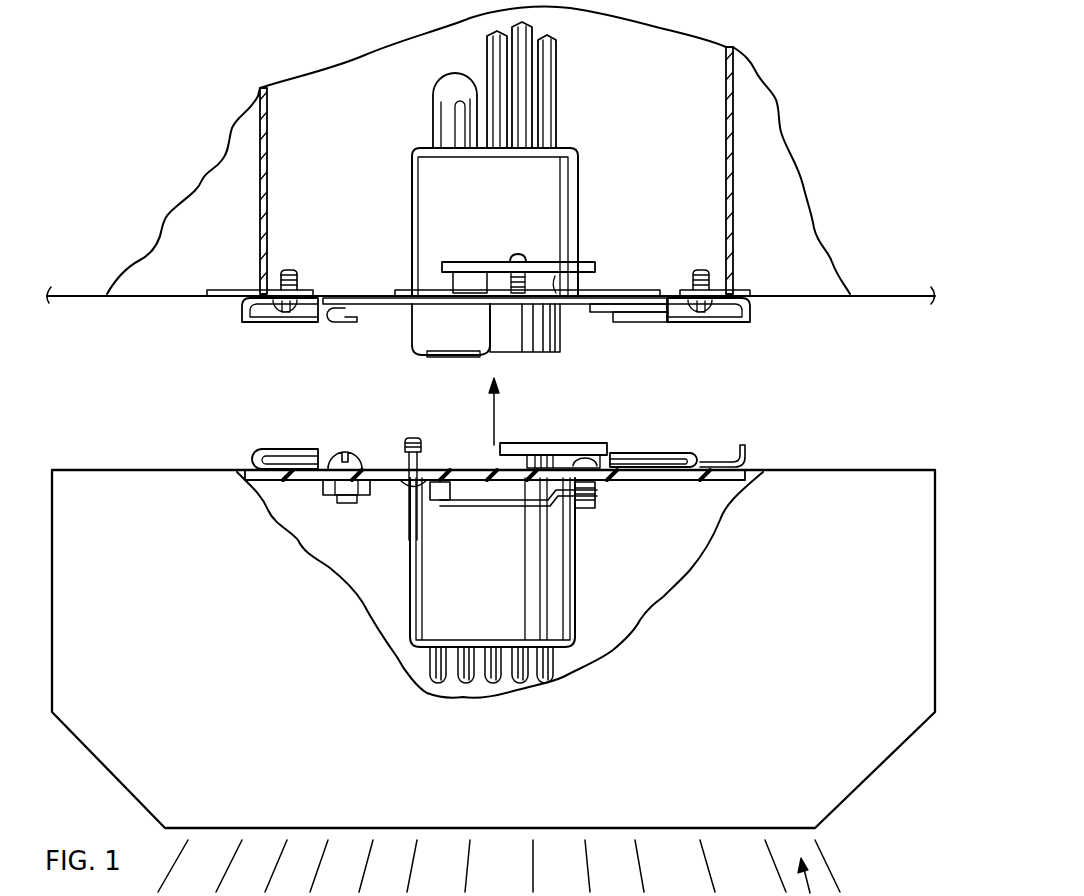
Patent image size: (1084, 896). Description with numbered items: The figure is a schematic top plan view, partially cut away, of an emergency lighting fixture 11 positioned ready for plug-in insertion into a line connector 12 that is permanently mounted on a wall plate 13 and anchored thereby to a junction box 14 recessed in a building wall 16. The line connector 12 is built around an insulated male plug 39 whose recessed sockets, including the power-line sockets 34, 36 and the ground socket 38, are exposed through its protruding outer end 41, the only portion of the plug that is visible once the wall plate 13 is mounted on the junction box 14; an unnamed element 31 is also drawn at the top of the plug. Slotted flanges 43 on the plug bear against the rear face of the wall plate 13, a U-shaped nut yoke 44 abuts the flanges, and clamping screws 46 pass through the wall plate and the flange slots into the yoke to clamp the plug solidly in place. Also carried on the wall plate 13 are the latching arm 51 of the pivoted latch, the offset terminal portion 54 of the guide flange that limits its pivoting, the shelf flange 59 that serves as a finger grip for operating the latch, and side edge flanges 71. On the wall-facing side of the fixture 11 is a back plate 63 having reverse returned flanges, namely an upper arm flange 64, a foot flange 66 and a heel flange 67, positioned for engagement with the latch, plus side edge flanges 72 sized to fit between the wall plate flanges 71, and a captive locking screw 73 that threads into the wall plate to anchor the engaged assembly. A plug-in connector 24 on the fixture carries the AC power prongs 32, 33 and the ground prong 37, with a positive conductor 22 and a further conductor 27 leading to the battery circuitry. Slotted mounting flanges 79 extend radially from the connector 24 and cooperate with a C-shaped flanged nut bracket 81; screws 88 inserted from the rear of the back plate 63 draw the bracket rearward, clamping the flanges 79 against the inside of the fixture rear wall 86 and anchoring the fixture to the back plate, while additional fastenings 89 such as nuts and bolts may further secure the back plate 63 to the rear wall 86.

The emergency lighting fixture 11 is at (208, 468).
The line connector 12 is at (222, 307).
The wall plate 13 is at (285, 336).
The junction box 14 is at (268, 184).
The building wall 16 is at (94, 298).
The positive conductor 22 is at (465, 680).
The plug-in connector 24 is at (577, 553).
The conductor 27 is at (436, 662).
The polarizing key tube 31 is at (448, 92).
The prong 32 is at (496, 681).
The prong 33 is at (521, 681).
The socket 34 is at (490, 68).
The socket 36 is at (528, 28).
The ground prong 37 is at (556, 673).
The ground socket 38 is at (550, 68).
The insulated male plug 39 is at (588, 207).
The protruding outer end 41 is at (558, 346).
The slotted flanges 43 is at (460, 283).
The nut yoke 44 is at (588, 264).
The clamping screws 46 is at (519, 258).
The latching arm 51 is at (583, 303).
The terminal portion 54 is at (631, 320).
The shelf flange 59 is at (462, 342).
The back plate 63 is at (383, 468).
The upper arm flange 64 is at (673, 453).
The foot flange 66 is at (530, 445).
The heel flange 67 is at (270, 452).
The side edge flanges 71 is at (746, 307).
The side edge flanges 72 is at (750, 455).
The locking screw 73 is at (421, 448).
The slotted mounting flanges 79 is at (444, 498).
The flanged nut bracket 81 is at (508, 506).
The rear wall 86 is at (280, 481).
The screws 88 is at (597, 511).
The additional fastenings 89 is at (336, 455).